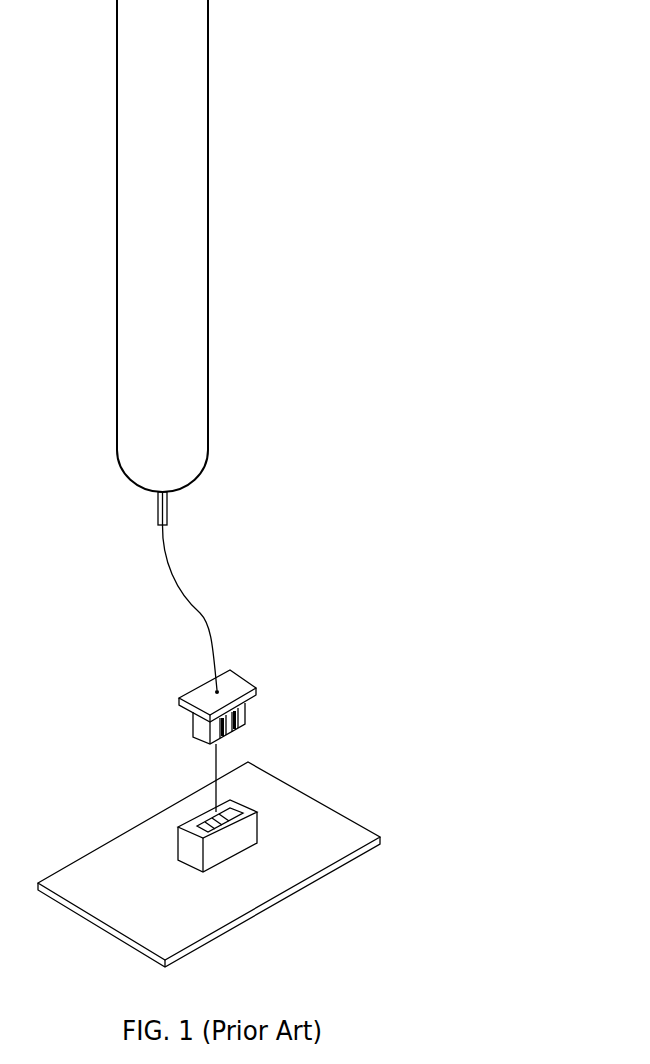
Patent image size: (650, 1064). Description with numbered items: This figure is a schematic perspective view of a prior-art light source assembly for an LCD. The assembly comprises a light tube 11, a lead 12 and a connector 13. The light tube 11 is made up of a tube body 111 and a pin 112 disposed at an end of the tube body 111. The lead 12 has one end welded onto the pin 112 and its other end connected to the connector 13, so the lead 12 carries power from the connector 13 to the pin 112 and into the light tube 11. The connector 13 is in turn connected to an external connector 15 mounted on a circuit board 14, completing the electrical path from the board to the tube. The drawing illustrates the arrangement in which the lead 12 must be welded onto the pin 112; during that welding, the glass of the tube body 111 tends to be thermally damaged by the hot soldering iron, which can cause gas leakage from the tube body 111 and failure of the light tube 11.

The light tube 11 is at (209, 268).
The tube body 111 is at (173, 105).
The pin 112 is at (167, 510).
The lead 12 is at (200, 615).
The connector 13 is at (243, 683).
The circuit board 14 is at (293, 803).
The external connector 15 is at (200, 822).